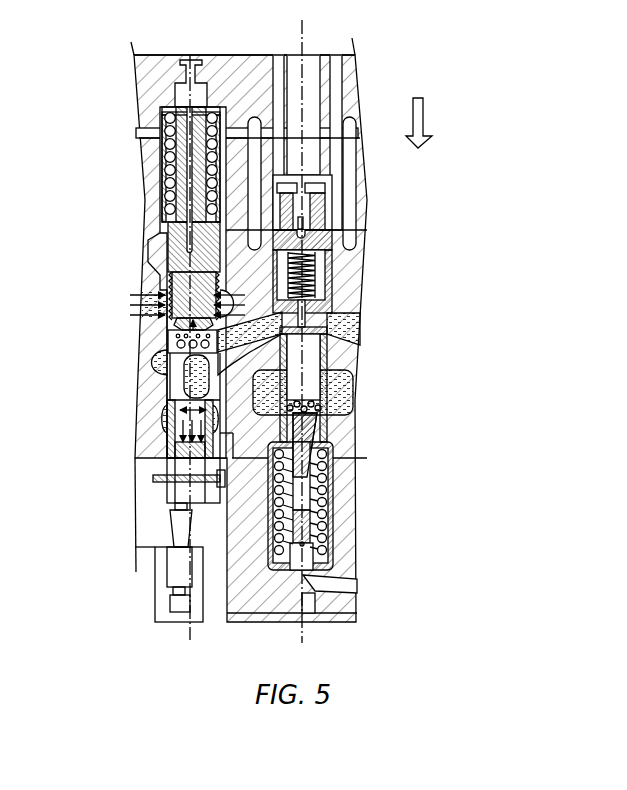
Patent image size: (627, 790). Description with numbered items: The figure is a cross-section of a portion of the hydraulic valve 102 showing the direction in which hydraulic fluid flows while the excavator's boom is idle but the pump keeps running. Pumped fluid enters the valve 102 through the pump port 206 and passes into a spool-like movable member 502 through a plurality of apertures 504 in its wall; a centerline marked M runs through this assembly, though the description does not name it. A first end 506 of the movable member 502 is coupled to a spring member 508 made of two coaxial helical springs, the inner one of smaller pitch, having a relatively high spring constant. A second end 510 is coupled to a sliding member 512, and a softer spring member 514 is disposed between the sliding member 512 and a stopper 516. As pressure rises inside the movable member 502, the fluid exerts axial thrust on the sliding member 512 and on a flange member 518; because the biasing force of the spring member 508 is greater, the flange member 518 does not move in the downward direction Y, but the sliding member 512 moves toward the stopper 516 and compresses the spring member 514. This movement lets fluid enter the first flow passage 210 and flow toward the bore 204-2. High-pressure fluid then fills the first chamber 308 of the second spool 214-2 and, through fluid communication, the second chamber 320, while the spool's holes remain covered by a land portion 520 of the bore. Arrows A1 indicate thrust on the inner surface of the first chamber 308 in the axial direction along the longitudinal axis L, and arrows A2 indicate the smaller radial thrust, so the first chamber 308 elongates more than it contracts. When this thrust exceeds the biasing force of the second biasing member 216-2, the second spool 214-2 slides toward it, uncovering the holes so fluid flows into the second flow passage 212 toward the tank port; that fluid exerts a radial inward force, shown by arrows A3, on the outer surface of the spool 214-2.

The valve 102 is at (525, 98).
The bore 204-2 is at (160, 114).
The second biasing member 216-2 is at (221, 112).
The second flow passage 212 is at (160, 324).
The land portion 520 is at (167, 337).
The first chamber 308 is at (170, 363).
The first flow passage 210 is at (172, 368).
The second chamber 320 is at (167, 440).
The second spool 214-2 is at (160, 463).
The stopper 516 is at (320, 238).
The spring member 514 is at (318, 270).
The sliding member 512 is at (320, 292).
The second end 510 is at (330, 334).
The pump port 206 is at (340, 385).
The apertures 504 is at (325, 408).
The movable member 502 is at (330, 425).
The first end 506 is at (332, 453).
The flange member 518 is at (322, 490).
The spring member 508 is at (313, 512).
The arrows A1 is at (175, 430).
The arrows A2 is at (167, 403).
The arrows A3 is at (140, 292).
The axis M is at (303, 28).
The longitudinal axis L is at (190, 633).
The downward direction Y is at (425, 115).